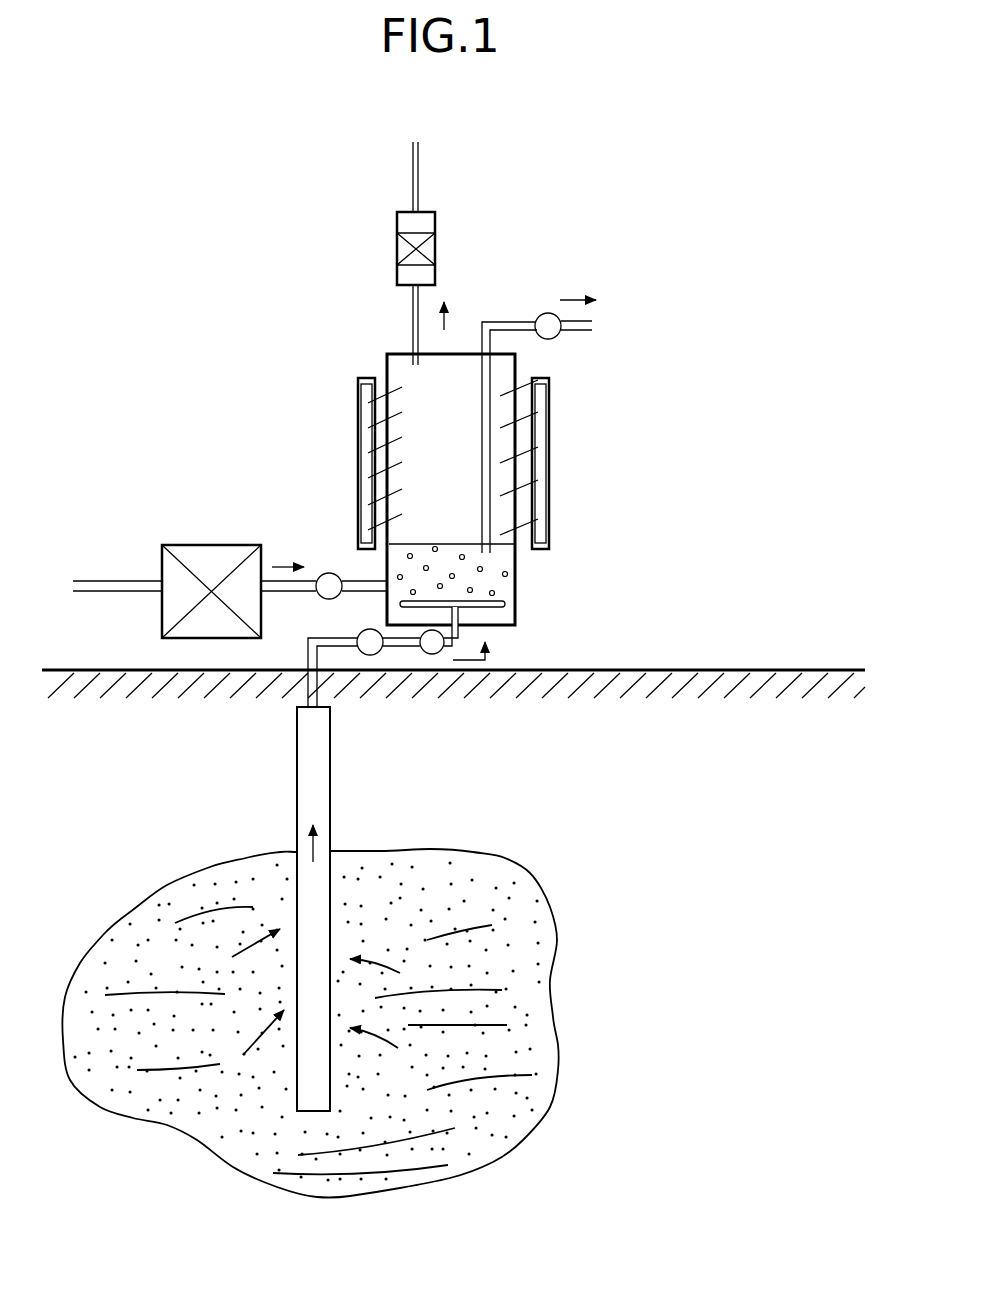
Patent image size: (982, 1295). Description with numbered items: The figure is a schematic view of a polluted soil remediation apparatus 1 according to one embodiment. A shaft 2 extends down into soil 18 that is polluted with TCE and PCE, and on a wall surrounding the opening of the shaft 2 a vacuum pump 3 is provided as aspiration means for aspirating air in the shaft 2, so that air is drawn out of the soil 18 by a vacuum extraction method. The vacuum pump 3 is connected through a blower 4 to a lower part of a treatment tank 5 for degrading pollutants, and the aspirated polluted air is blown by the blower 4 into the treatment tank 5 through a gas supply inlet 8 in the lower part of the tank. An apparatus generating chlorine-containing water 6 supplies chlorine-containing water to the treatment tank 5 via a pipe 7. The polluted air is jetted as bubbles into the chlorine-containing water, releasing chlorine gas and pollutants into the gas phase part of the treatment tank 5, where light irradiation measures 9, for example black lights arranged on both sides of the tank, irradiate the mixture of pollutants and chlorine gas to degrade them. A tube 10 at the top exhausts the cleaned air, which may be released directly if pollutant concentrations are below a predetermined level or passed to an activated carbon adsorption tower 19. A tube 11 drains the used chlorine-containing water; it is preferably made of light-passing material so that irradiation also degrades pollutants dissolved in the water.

The polluted soil remediation apparatus 1 is at (252, 335).
The shaft 2 is at (332, 897).
The vacuum pump 3 is at (370, 655).
The blower 4 is at (432, 654).
The treatment tank 5 is at (512, 588).
The apparatus generating chlorine-containing water 6 is at (234, 545).
The pipe 7 is at (290, 592).
The gas supply inlet 8 is at (505, 607).
The light irradiation measures 9 is at (358, 429).
The tube 10 is at (412, 325).
The tube 11 is at (518, 331).
The soil 18 is at (497, 1023).
The activated carbon adsorption tower 19 is at (436, 246).